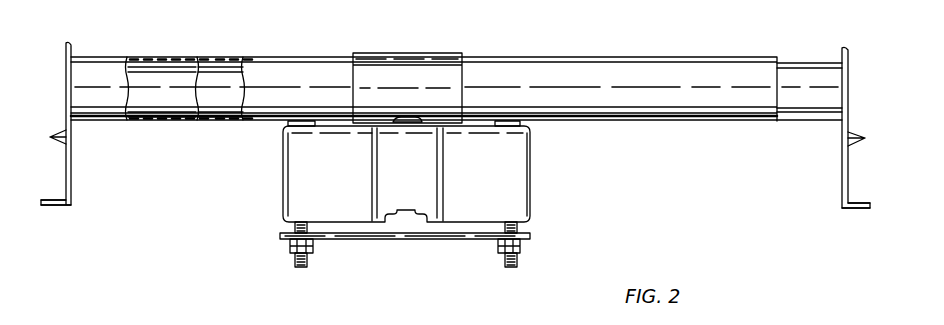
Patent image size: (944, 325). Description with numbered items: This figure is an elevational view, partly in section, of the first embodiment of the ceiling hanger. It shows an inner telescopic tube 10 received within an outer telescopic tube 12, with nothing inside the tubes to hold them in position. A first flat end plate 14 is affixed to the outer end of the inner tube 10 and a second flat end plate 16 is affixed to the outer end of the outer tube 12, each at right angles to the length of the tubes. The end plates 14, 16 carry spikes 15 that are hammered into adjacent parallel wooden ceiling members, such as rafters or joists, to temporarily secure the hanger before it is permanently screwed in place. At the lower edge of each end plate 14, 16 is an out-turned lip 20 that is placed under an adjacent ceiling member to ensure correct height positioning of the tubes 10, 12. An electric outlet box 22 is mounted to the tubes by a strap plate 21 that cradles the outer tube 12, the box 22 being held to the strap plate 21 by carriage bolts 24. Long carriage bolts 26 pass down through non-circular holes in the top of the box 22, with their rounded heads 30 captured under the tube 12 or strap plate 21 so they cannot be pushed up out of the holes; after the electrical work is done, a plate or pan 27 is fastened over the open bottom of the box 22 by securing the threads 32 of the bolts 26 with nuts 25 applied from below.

The inner telescopic tube 10 is at (810, 72).
The outer telescopic tube 12 is at (711, 68).
The first flat end plate 14 is at (842, 180).
The spike 15 is at (56, 134).
The second flat end plate 16 is at (72, 174).
The out-turned lip 20 is at (53, 207).
The strap plate 21 is at (403, 66).
The electric outlet box 22 is at (488, 133).
The carriage bolt 24 is at (408, 117).
The nut 25 is at (288, 246).
The long carriage bolt 26 is at (295, 264).
The plate or pan 27 is at (393, 239).
The rounded head 30 is at (289, 124).
The threads 32 is at (295, 229).